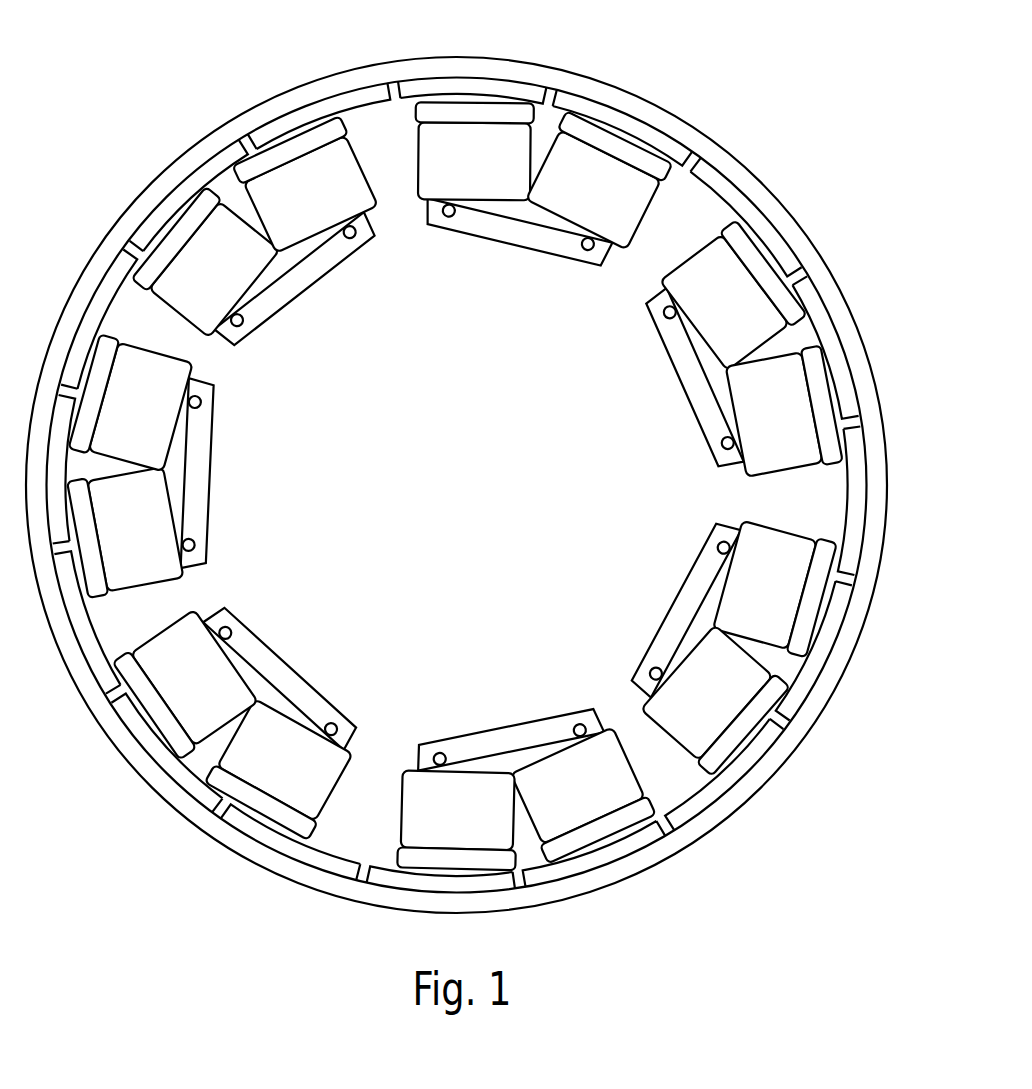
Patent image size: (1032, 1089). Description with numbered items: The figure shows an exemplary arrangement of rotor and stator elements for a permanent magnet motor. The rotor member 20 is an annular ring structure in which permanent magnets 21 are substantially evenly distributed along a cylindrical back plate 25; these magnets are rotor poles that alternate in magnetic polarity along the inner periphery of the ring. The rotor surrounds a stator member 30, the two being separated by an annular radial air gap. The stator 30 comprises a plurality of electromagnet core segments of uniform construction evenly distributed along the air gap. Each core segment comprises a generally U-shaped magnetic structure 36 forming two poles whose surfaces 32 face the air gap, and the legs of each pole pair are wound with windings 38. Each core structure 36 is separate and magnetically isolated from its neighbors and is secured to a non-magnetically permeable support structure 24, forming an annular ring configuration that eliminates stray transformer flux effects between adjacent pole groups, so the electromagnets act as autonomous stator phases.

The rotor member 20 is at (469, 462).
The permanent magnets 21 is at (720, 188).
The mounting plate 24 is at (517, 232).
The cylindrical back plate 25 is at (653, 107).
The stator member 30 is at (464, 452).
The pole surfaces 32 is at (475, 112).
The U-shaped magnetic structure 36 is at (449, 210).
The windings 38 is at (474, 161).